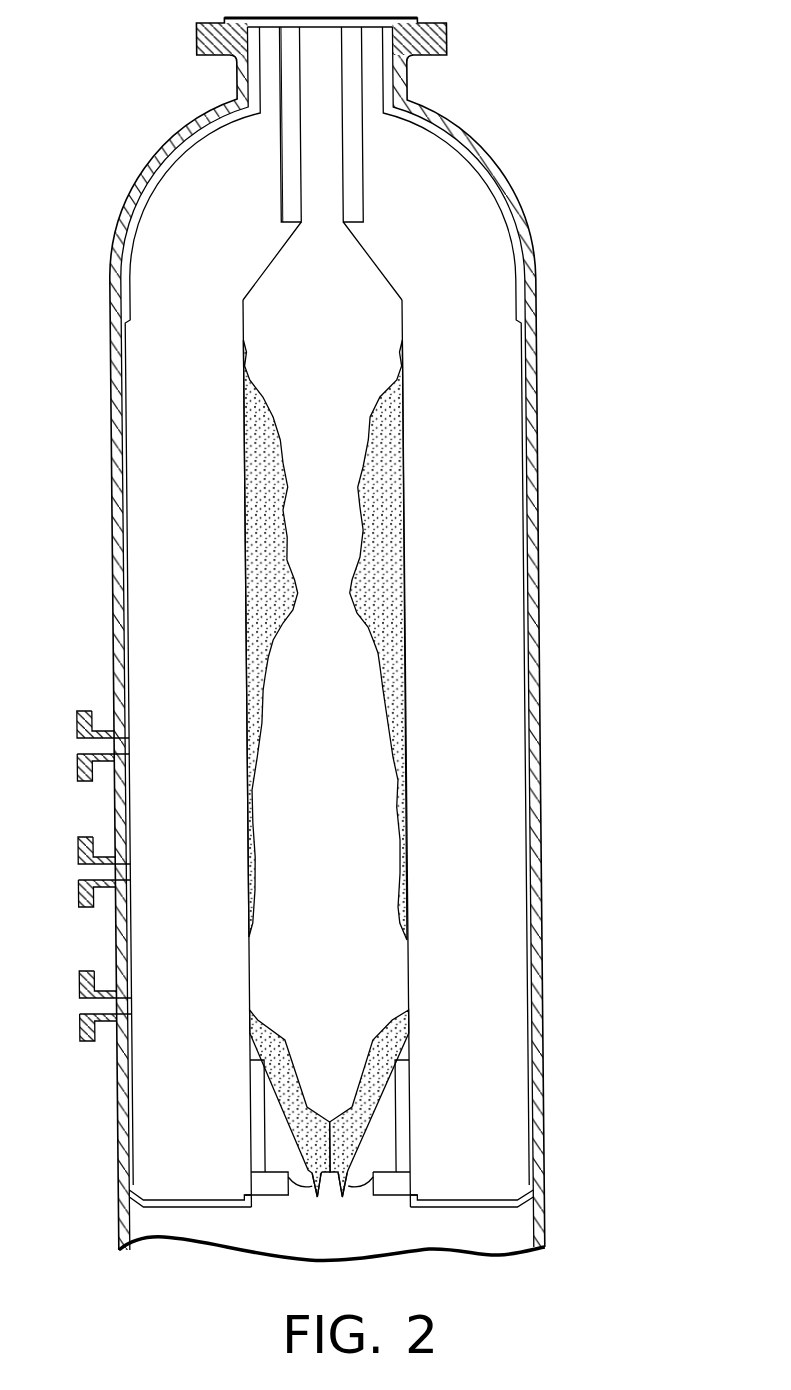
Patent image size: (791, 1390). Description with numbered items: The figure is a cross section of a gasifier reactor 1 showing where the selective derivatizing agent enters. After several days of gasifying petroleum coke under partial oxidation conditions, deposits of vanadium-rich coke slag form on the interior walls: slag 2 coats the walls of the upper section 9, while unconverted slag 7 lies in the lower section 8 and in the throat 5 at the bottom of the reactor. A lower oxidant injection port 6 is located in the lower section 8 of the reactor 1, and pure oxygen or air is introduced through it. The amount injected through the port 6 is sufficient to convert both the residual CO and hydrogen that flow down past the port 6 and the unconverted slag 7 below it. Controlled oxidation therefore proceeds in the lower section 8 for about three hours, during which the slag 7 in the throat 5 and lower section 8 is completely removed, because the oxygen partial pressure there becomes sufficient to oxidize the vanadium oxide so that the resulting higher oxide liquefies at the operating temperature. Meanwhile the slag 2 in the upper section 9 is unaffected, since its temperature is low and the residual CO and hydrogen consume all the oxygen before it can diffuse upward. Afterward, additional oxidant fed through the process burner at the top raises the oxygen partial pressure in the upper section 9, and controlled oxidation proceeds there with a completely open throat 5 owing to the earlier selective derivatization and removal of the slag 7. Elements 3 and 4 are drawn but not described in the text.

The gasifier reactor 1 is at (158, 312).
The slag in upper section 2 is at (376, 566).
The material layer on cavity wall 3 is at (400, 658).
The outlet drips 4 is at (327, 1183).
The throat 5 is at (365, 1155).
The lower oxidant injection port 6 is at (73, 714).
The unconverted slag 7 is at (340, 1130).
The lower section 8 is at (291, 882).
The upper section 9 is at (266, 367).